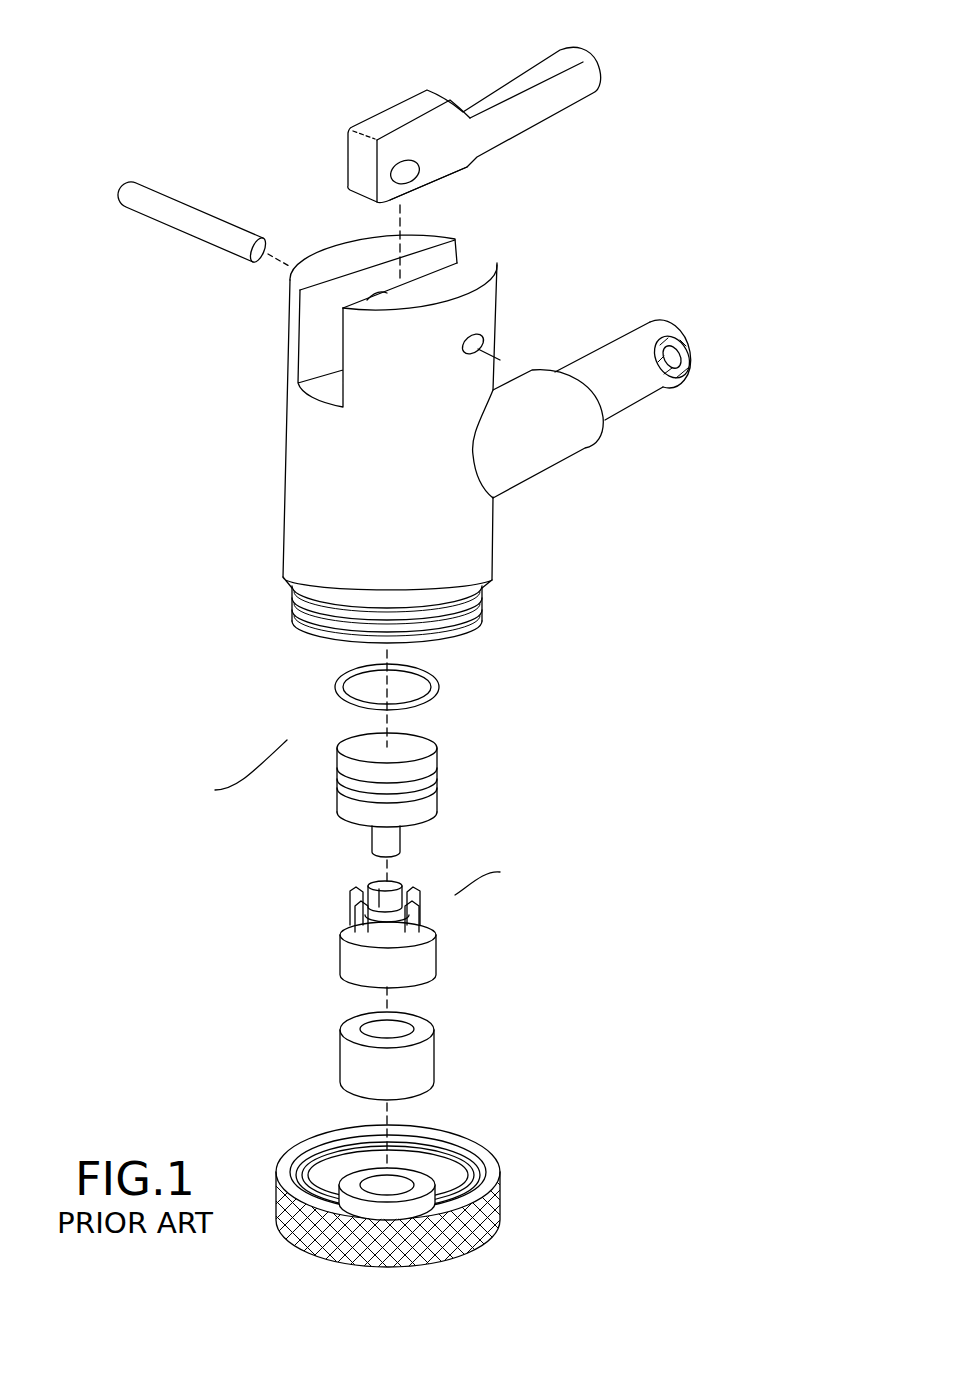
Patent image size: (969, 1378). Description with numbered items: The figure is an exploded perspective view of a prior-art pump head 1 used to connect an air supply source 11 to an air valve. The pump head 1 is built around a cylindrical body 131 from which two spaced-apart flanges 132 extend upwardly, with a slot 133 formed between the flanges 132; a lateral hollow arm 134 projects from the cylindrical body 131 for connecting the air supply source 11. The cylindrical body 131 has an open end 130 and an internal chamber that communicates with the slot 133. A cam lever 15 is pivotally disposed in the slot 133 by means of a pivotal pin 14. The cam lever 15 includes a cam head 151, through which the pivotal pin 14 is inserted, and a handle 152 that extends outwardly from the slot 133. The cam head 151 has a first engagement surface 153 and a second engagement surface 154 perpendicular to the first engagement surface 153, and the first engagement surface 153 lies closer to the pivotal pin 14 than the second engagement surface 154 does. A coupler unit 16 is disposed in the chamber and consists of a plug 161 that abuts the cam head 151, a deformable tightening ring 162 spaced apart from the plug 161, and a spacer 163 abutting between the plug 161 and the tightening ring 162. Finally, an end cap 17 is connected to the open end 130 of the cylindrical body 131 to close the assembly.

The pump head 1 is at (291, 736).
The air supply source 11 is at (627, 350).
The open end 130 is at (460, 627).
The cylindrical body 131 is at (307, 490).
The flanges 132 is at (337, 245).
The slot 133 is at (320, 343).
The lateral hollow arm 134 is at (543, 443).
The pivotal pin 14 is at (195, 230).
The cam lever 15 is at (428, 86).
The cam head 151 is at (395, 147).
The handle 152 is at (563, 88).
The first engagement surface 153 is at (440, 187).
The second engagement surface 154 is at (358, 162).
The coupler unit 16 is at (450, 898).
The plug 161 is at (425, 773).
The deformable tightening ring 162 is at (418, 1067).
The spacer 163 is at (362, 963).
The end cap 17 is at (490, 1208).